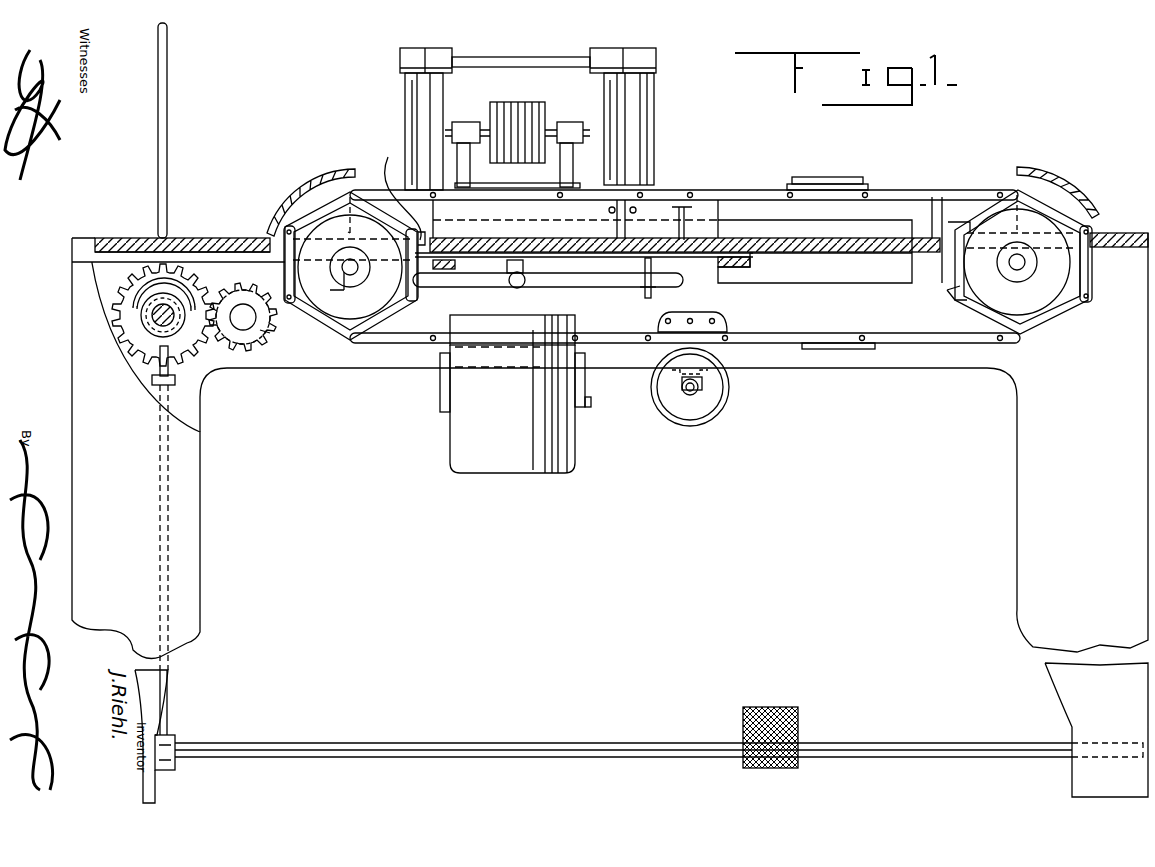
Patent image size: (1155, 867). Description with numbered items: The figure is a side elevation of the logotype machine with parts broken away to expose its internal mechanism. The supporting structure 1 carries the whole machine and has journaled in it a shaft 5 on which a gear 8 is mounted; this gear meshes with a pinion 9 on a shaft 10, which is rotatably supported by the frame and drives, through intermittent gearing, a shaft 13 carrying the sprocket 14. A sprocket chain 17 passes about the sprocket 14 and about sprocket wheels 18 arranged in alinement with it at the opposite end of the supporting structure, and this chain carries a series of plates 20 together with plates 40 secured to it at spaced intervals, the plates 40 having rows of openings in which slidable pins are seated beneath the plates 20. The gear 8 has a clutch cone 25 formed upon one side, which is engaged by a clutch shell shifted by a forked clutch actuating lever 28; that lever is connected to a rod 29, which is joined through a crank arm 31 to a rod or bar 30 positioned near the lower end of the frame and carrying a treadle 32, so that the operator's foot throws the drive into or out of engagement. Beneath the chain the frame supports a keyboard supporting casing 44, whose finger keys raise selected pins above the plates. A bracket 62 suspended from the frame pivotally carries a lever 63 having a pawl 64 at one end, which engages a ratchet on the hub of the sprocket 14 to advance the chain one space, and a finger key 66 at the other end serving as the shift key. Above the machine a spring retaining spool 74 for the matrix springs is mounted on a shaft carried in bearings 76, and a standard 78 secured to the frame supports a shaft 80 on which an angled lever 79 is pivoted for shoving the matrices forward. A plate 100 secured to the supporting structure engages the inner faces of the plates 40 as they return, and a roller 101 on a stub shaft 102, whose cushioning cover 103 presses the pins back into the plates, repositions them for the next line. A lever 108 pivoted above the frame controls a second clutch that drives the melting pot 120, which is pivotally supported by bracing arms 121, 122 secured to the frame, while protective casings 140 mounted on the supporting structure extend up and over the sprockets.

The supporting structure 1 is at (880, 250).
The shaft 5 is at (167, 310).
The gear 8 is at (132, 292).
The pinion 9 is at (257, 342).
The shaft 10 is at (232, 285).
The shaft 13 is at (352, 270).
The sprocket 14 is at (340, 342).
The sprocket chain 17 is at (947, 192).
The sprocket wheels 18 is at (338, 298).
The plates 20 is at (843, 178).
The clutch cone 25 is at (153, 337).
The clutch actuating lever 28 is at (133, 310).
The rod 29 is at (167, 610).
The rod or bar 30 is at (430, 745).
The crank arm 31 is at (163, 757).
The treadle 32 is at (800, 717).
The plates 40 is at (863, 182).
The keyboard supporting casing 44 is at (897, 272).
The bracket 62 is at (525, 283).
The lever 63 is at (443, 283).
The pawl 64 is at (396, 190).
The finger key 66 is at (683, 205).
The spring retaining spool 74 is at (517, 100).
The bearings 76 is at (462, 133).
The standard 78 is at (405, 113).
The angled lever 79 is at (653, 127).
The shaft 80 is at (557, 62).
The plate 100 is at (727, 315).
The roller 101 is at (687, 412).
The stub shaft 102 is at (695, 392).
The cushioning cover 103 is at (722, 420).
The lever 108 is at (158, 145).
The melting pot 120 is at (500, 460).
The bracing arm 121 is at (442, 412).
The bracing arm 122 is at (585, 402).
The protective casings 140 is at (278, 220).